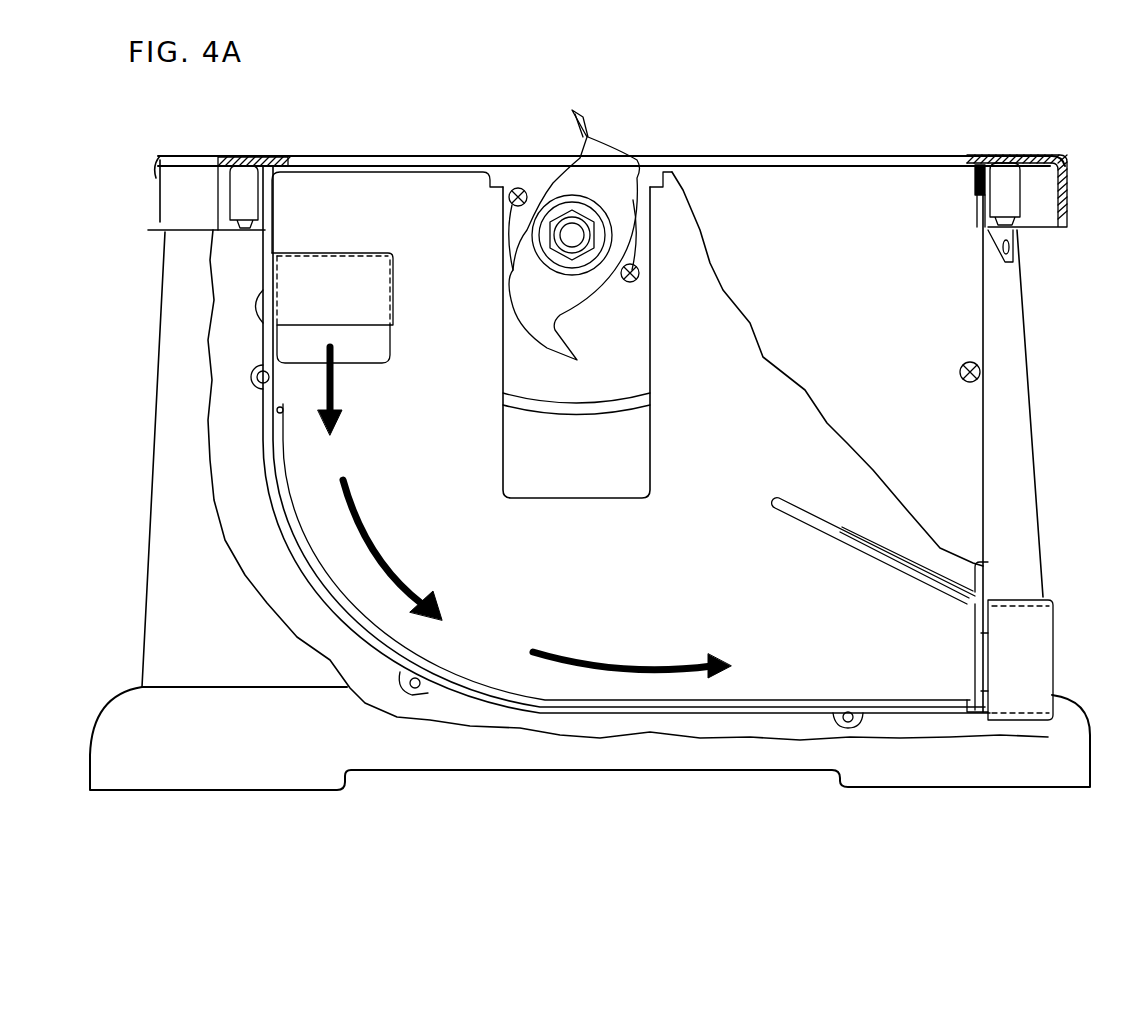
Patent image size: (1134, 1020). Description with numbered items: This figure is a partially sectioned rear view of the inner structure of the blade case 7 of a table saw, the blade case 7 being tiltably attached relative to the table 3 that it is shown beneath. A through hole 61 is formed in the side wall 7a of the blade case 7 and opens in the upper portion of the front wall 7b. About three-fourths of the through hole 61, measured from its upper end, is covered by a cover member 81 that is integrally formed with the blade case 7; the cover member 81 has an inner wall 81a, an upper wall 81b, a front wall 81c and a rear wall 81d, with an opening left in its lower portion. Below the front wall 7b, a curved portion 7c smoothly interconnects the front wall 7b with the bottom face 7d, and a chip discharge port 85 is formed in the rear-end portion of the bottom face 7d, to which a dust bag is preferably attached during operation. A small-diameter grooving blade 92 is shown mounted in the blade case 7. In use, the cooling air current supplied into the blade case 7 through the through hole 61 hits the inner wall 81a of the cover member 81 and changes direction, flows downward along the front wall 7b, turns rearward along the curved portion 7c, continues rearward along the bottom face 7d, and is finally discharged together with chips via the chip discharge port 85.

The table 3 is at (1033, 172).
The blade case 7 is at (603, 449).
The side wall 7a is at (390, 196).
The front wall 7b is at (271, 414).
The curved portion 7c is at (433, 668).
The bottom face 7d is at (655, 698).
The through hole 61 is at (367, 340).
The cover member 81 is at (341, 272).
The inner wall 81a is at (350, 297).
The upper wall 81b is at (323, 254).
The front wall 81c is at (273, 277).
The rear wall 81d is at (392, 282).
The chip discharge port 85 is at (1037, 639).
The grooving blade 92 is at (613, 142).